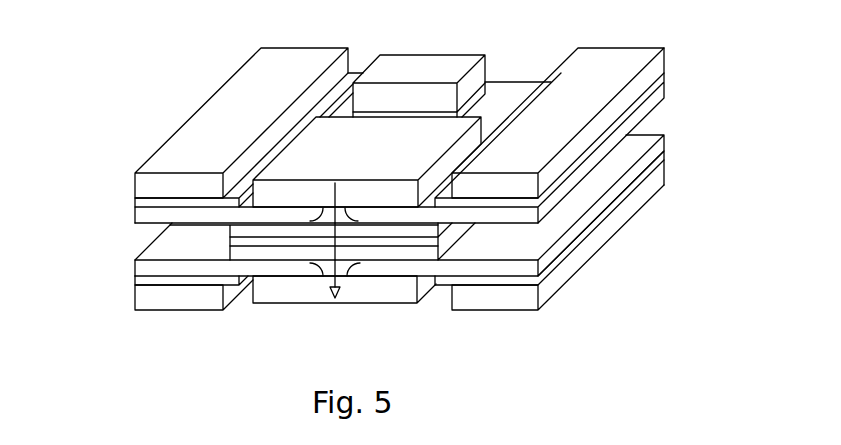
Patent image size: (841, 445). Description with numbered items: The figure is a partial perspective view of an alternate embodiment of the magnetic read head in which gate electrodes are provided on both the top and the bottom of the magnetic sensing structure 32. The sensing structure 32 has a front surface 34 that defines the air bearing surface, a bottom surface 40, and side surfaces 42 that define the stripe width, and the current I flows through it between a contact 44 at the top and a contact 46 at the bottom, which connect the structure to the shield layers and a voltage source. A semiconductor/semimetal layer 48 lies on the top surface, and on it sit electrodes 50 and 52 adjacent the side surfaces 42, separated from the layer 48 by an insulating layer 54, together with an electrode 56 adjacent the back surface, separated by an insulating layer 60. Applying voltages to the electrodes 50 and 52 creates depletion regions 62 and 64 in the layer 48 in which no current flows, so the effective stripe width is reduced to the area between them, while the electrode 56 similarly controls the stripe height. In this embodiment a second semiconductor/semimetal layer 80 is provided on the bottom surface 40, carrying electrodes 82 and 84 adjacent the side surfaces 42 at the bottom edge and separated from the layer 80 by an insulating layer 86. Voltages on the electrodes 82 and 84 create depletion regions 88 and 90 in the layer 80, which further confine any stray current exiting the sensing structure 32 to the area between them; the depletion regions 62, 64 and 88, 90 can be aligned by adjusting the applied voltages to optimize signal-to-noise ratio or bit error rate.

The magnetic sensing structure 32 is at (196, 246).
The front surface 34 is at (255, 249).
The bottom surface 40 is at (287, 269).
The side surfaces 42 is at (221, 232).
The contact 44 is at (397, 162).
The contact 46 is at (368, 297).
The semiconductor/semimetal material layer 48 is at (667, 92).
The electrode 50 is at (297, 89).
The electrode 52 is at (610, 89).
The insulating layer 54 is at (137, 200).
The electrode 56 is at (421, 57).
The insulating layer 60 is at (487, 93).
The depletion region 62 is at (143, 226).
The depletion region 64 is at (528, 220).
The semiconductor/semimetal layer 80 is at (667, 145).
The electrode 82 is at (177, 302).
The electrode 84 is at (520, 306).
The insulating layer 86 is at (135, 280).
The depletion region 88 is at (135, 265).
The depletion region 90 is at (425, 268).